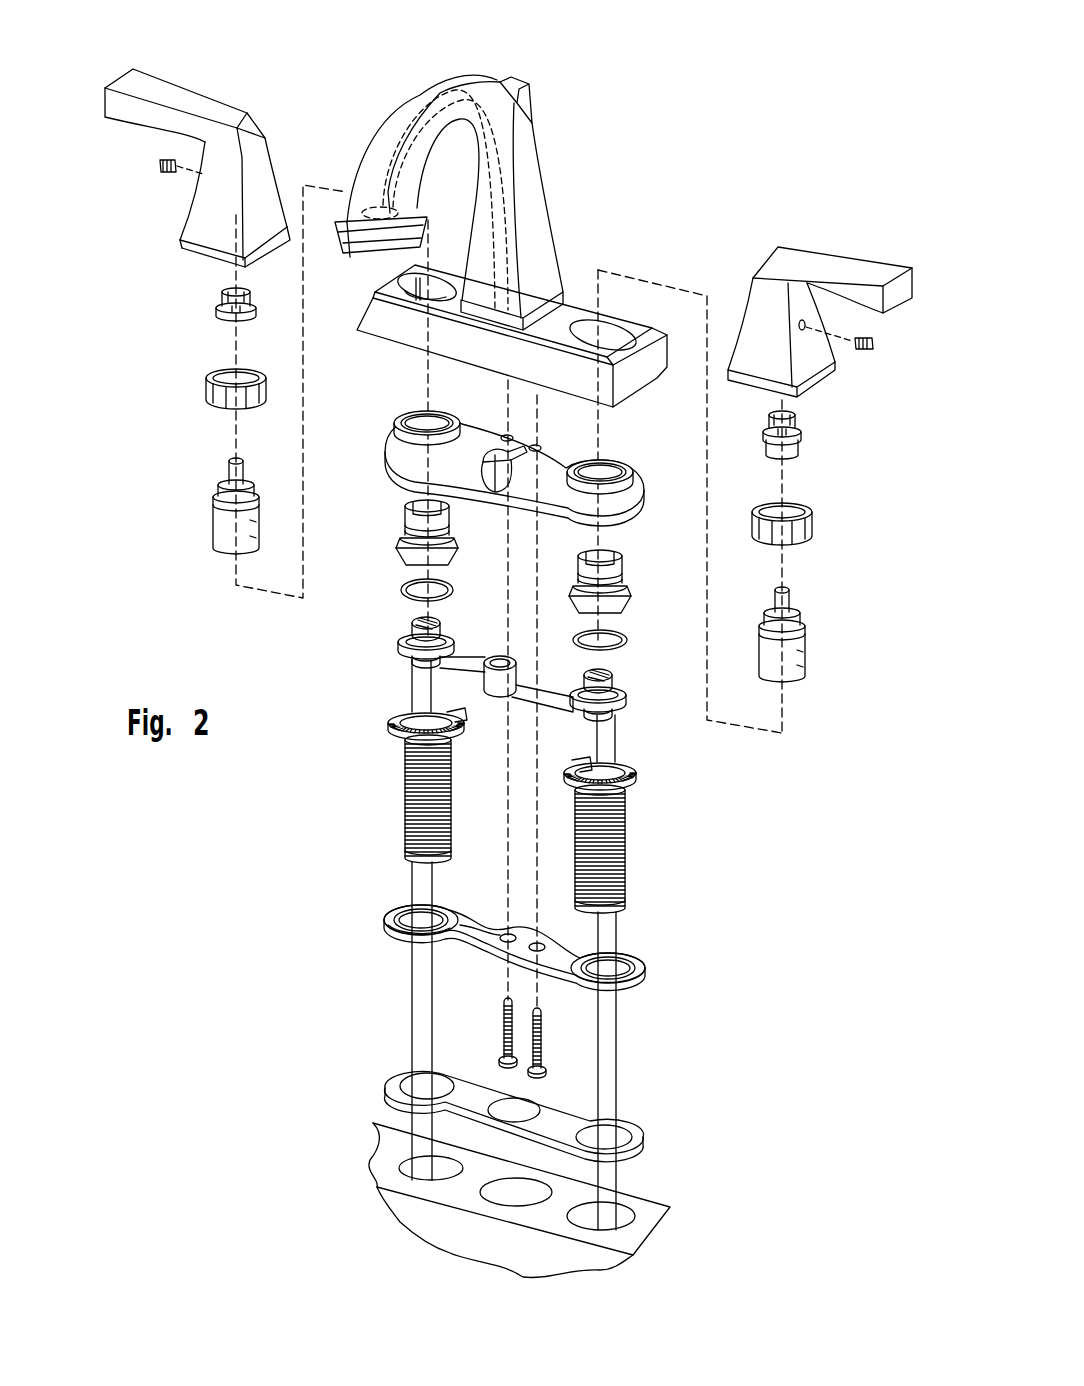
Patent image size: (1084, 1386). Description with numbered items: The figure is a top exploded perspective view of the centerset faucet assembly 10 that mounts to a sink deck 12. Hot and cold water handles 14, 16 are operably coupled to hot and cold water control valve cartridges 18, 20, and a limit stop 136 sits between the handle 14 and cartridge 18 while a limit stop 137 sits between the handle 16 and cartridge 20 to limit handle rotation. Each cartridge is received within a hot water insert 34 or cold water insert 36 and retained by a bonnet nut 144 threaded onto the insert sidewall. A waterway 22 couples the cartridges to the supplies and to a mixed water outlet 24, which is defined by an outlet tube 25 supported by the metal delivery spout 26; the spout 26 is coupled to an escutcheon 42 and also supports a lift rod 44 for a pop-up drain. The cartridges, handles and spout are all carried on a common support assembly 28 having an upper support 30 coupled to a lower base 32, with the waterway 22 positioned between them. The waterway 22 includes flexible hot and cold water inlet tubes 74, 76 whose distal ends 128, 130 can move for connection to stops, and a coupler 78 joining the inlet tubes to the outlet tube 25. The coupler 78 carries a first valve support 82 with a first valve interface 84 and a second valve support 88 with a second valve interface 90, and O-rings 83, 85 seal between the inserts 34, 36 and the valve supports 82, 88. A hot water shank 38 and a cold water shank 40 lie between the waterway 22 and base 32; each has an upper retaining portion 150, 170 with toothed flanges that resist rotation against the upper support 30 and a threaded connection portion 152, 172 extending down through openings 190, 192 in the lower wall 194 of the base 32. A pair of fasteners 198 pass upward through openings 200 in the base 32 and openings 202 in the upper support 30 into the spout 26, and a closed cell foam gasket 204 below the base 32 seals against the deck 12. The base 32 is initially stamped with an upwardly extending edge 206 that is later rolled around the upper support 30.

The faucet assembly 10 is at (688, 118).
The sink deck 12 is at (375, 1123).
The hot water handle 14 is at (185, 97).
The cold water handle 16 is at (850, 267).
The hot water valve cartridge 18 is at (218, 525).
The cold water valve cartridge 20 is at (802, 653).
The waterway 22 is at (407, 687).
The mixed water outlet 24 is at (350, 257).
The outlet tube 25 is at (380, 130).
The delivery spout 26 is at (433, 85).
The common support assembly 28 is at (763, 872).
The upper support 30 is at (643, 467).
The lower base 32 is at (640, 968).
The hot water insert 34 is at (400, 532).
The cold water insert 36 is at (627, 578).
The hot water shank 38 is at (405, 793).
The cold water shank 40 is at (625, 833).
The escutcheon 42 is at (637, 330).
The lift rod 44 is at (513, 83).
The hot water inlet tube 74 is at (417, 1020).
The cold water inlet tube 76 is at (615, 1070).
The coupler 78 is at (470, 680).
The first valve support 82 is at (400, 648).
The O-ring 83 is at (402, 590).
The first valve interface 84 is at (413, 625).
The O-ring 85 is at (627, 637).
The second valve support 88 is at (625, 715).
The second valve interface 90 is at (623, 690).
The distal end of hot water inlet tube 128 is at (407, 1173).
The distal end of cold water inlet tube 130 is at (613, 1220).
The limit stop 136 is at (223, 312).
The limit stop 137 is at (797, 430).
The bonnet nut 144 is at (207, 395).
The upper retaining portion 150 is at (397, 732).
The connection portion 152 is at (403, 847).
The upper retaining portion 170 is at (637, 777).
The connection portion 172 is at (625, 897).
The opening 190 is at (397, 933).
The opening 192 is at (647, 983).
The lower wall 194 is at (473, 933).
The fasteners 198 is at (523, 1043).
The openings 200 is at (540, 917).
The openings 202 is at (513, 448).
The gasket 204 is at (642, 1130).
The upwardly extending edge 206 is at (383, 913).